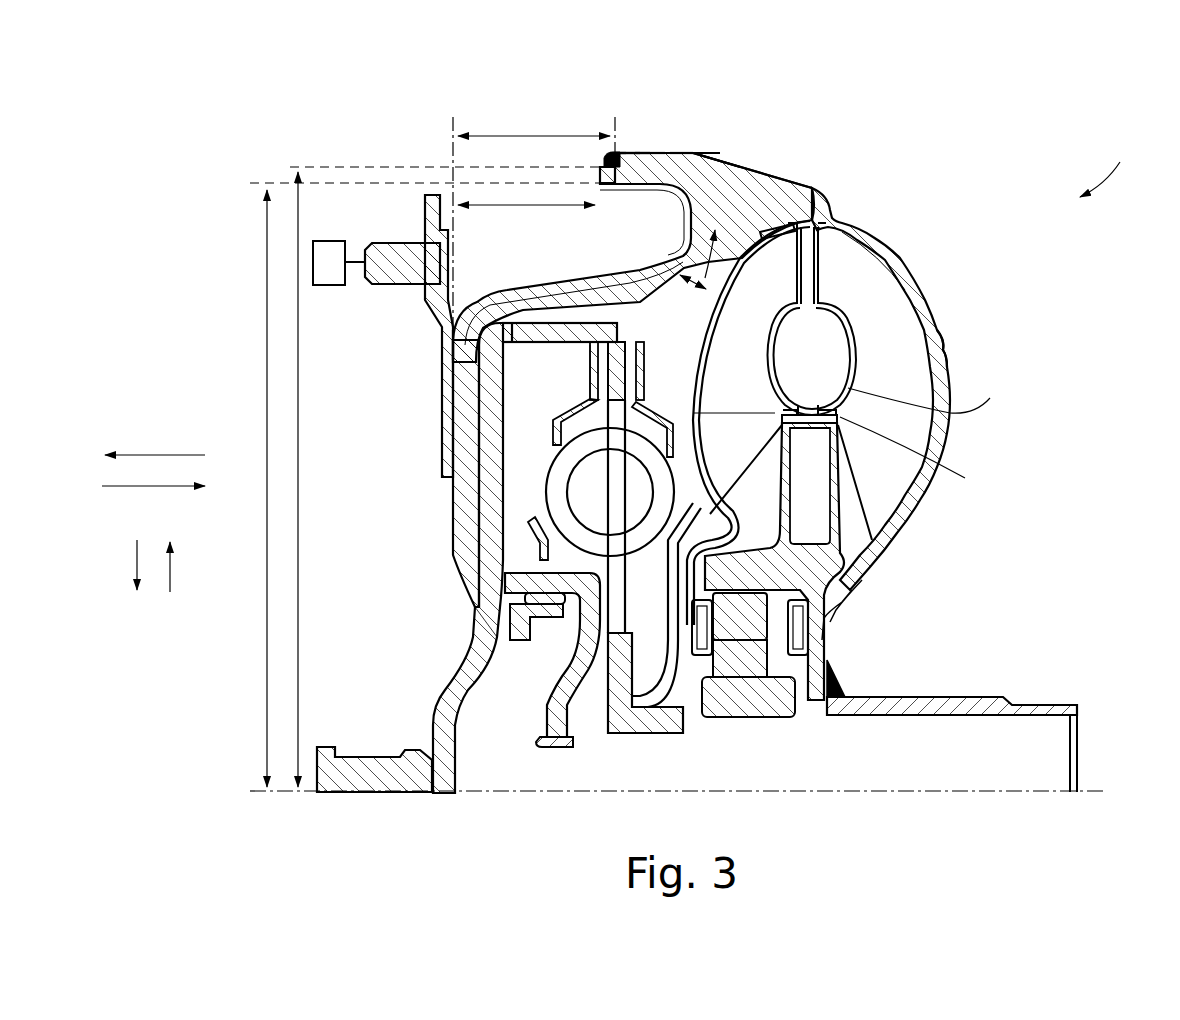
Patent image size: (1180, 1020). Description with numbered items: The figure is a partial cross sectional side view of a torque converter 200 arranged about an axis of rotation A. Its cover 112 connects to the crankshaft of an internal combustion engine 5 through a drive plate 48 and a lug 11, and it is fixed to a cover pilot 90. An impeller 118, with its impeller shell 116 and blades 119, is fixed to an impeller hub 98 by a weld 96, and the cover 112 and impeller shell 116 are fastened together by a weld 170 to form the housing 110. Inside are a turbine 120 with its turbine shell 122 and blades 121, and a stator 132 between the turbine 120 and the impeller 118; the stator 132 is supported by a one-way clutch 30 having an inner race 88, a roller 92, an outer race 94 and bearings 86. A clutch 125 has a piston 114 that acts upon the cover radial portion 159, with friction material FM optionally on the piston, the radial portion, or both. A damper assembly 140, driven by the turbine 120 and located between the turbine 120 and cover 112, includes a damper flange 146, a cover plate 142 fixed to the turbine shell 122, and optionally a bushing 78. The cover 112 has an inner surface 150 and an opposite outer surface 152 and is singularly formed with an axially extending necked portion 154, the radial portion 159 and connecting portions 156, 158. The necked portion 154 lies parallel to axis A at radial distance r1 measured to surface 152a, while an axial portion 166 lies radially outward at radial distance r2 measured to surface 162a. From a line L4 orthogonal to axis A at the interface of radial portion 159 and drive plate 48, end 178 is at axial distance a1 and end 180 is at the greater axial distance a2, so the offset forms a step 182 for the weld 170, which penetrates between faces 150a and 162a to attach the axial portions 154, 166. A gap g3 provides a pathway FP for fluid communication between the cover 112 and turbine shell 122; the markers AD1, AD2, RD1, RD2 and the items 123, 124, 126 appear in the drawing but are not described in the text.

The internal combustion engine 5 is at (338, 274).
The lug 11 is at (403, 242).
The one-way clutch 30 is at (786, 612).
The drive plate 48 is at (442, 390).
The bushing 78 is at (538, 746).
The bearings 86 is at (810, 630).
The inner race 88 is at (757, 708).
The cover pilot 90 is at (322, 746).
The roller 92 is at (757, 672).
The outer race 94 is at (757, 631).
The weld 96 is at (846, 694).
The impeller hub 98 is at (985, 697).
The housing 110 is at (742, 160).
The cover 112 is at (478, 545).
The piston 114 is at (497, 585).
The impeller shell 116 is at (949, 340).
The impeller 118 is at (866, 297).
The blades 119 is at (908, 361).
The turbine 120 is at (778, 273).
The blades 121 is at (760, 349).
The turbine shell 122 is at (810, 207).
The retaining plate 123 is at (738, 245).
The spring element 124 is at (864, 397).
The clutch 125 is at (507, 396).
The spring element 126 is at (921, 454).
The stator 132 is at (882, 540).
The damper assembly 140 is at (543, 492).
The cover plate 142 is at (575, 685).
The damper flange 146 is at (512, 626).
The inner surface 150 is at (563, 343).
The face 150a is at (630, 152).
The outer surface 152 is at (600, 327).
The surface 152a is at (694, 152).
The axially extending necked portion 154 is at (720, 161).
The connecting portion 156 is at (660, 235).
The connecting portion 158 is at (531, 290).
The cover radial portion 159 is at (450, 513).
The surface 162a is at (648, 152).
The axial portion 166 is at (690, 150).
The weld 170 is at (613, 153).
The end 178 is at (600, 165).
The end 180 is at (618, 152).
The step 182 is at (600, 157).
The torque converter 200 is at (1115, 166).
The axis of rotation A is at (1102, 790).
The axial distance a1 is at (483, 203).
The axial distance a2 is at (478, 134).
The line L4 is at (453, 128).
The radial distance r1 is at (267, 312).
The radial distance r2 is at (298, 388).
The axial direction AD1 is at (155, 440).
The axial direction AD2 is at (153, 500).
The radial direction RD1 is at (197, 567).
The radial direction RD2 is at (107, 565).
The friction material FM is at (453, 340).
The gap g3 is at (680, 295).
The pathway FP is at (734, 252).